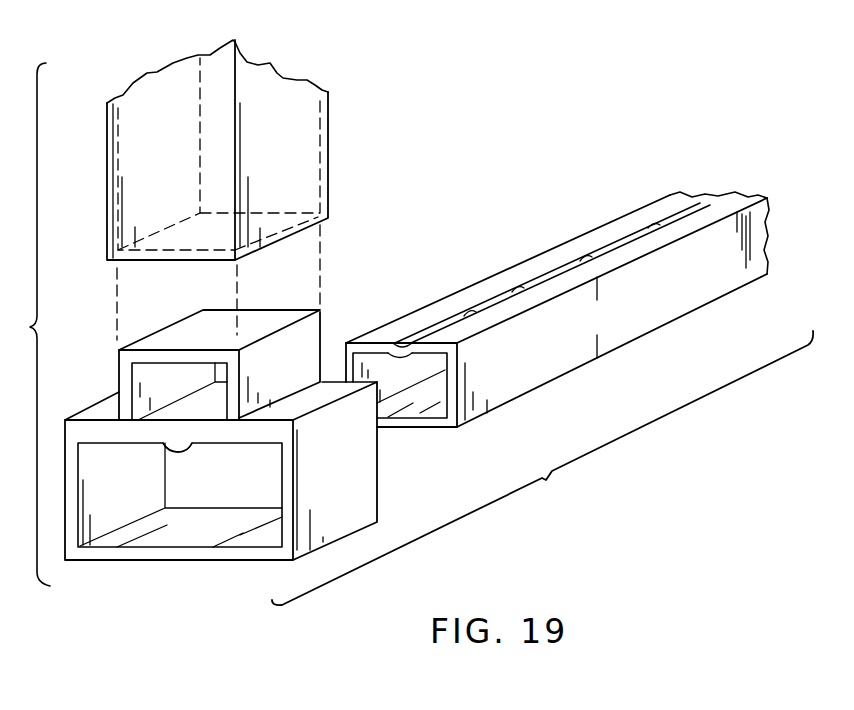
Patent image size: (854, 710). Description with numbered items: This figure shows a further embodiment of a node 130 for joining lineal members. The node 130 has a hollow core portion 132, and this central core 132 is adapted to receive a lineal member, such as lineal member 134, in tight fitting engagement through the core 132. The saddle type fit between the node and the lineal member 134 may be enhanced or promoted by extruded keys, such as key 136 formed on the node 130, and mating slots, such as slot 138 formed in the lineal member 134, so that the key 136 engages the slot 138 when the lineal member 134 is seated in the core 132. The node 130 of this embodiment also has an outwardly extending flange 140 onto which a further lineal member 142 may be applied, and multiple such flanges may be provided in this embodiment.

The node 130 is at (157, 565).
The hollow core portion 132 is at (188, 540).
The lineal member 134 is at (612, 222).
The key 136 is at (183, 452).
The slot 138 is at (547, 275).
The outwardly extending flange 140 is at (119, 368).
The lineal member 142 is at (331, 128).